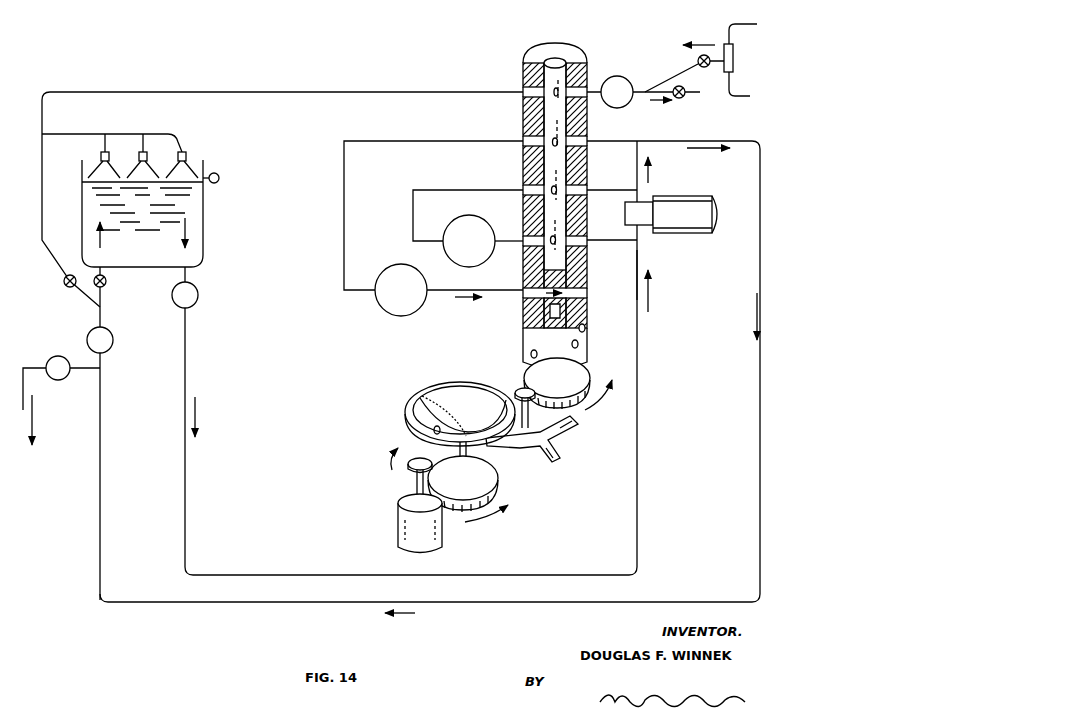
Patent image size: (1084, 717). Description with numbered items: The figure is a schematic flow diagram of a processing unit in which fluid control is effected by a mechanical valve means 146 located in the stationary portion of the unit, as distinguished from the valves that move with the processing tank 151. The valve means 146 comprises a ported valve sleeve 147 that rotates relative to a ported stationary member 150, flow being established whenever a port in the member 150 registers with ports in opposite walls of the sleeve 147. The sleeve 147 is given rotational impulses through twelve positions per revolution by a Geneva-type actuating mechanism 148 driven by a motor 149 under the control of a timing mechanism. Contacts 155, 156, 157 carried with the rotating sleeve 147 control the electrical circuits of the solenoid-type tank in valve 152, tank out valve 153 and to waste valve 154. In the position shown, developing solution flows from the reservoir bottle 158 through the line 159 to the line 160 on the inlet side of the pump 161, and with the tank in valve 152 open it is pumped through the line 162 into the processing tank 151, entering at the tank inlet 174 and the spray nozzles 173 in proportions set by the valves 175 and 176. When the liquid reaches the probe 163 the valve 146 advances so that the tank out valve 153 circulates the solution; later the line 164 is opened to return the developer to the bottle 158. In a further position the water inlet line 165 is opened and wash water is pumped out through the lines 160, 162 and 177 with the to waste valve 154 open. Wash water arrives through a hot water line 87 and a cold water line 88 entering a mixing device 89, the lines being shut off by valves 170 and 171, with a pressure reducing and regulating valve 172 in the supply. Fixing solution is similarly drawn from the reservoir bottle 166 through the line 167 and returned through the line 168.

The hot water line 87 is at (757, 24).
The cold water line 88 is at (750, 96).
The mixing device 89 is at (733, 52).
The mechanical valve means 146 is at (520, 342).
The ported valve sleeve 147 is at (567, 54).
The actuating mechanism 148 is at (408, 410).
The motor 149 is at (396, 515).
The ported stationary member 150 is at (551, 60).
The processing tank 151 is at (205, 240).
The tank in valve 152 is at (109, 349).
The tank out valve 153 is at (194, 304).
The to waste valve 154 is at (58, 356).
The contact 155 is at (586, 328).
The contact 156 is at (579, 344).
The contact 157 is at (531, 356).
The reservoir bottle 158 is at (382, 298).
The line 159 is at (477, 309).
The line 160 is at (637, 267).
The pump 161 is at (677, 196).
The line 162 is at (640, 602).
The probe 163 is at (219, 176).
The line 164 is at (426, 141).
The water inlet line 165 is at (390, 92).
The reservoir bottle 166 is at (478, 262).
The line 167 is at (596, 244).
The line 168 is at (468, 190).
The valve 170 is at (696, 60).
The valve 171 is at (684, 88).
The pressure reducing and regulating valve 172 is at (627, 78).
The spray nozzles 173 is at (184, 150).
The tank inlet 174 is at (102, 262).
The valve 175 is at (64, 285).
The valve 176 is at (106, 285).
The line 177 is at (88, 370).